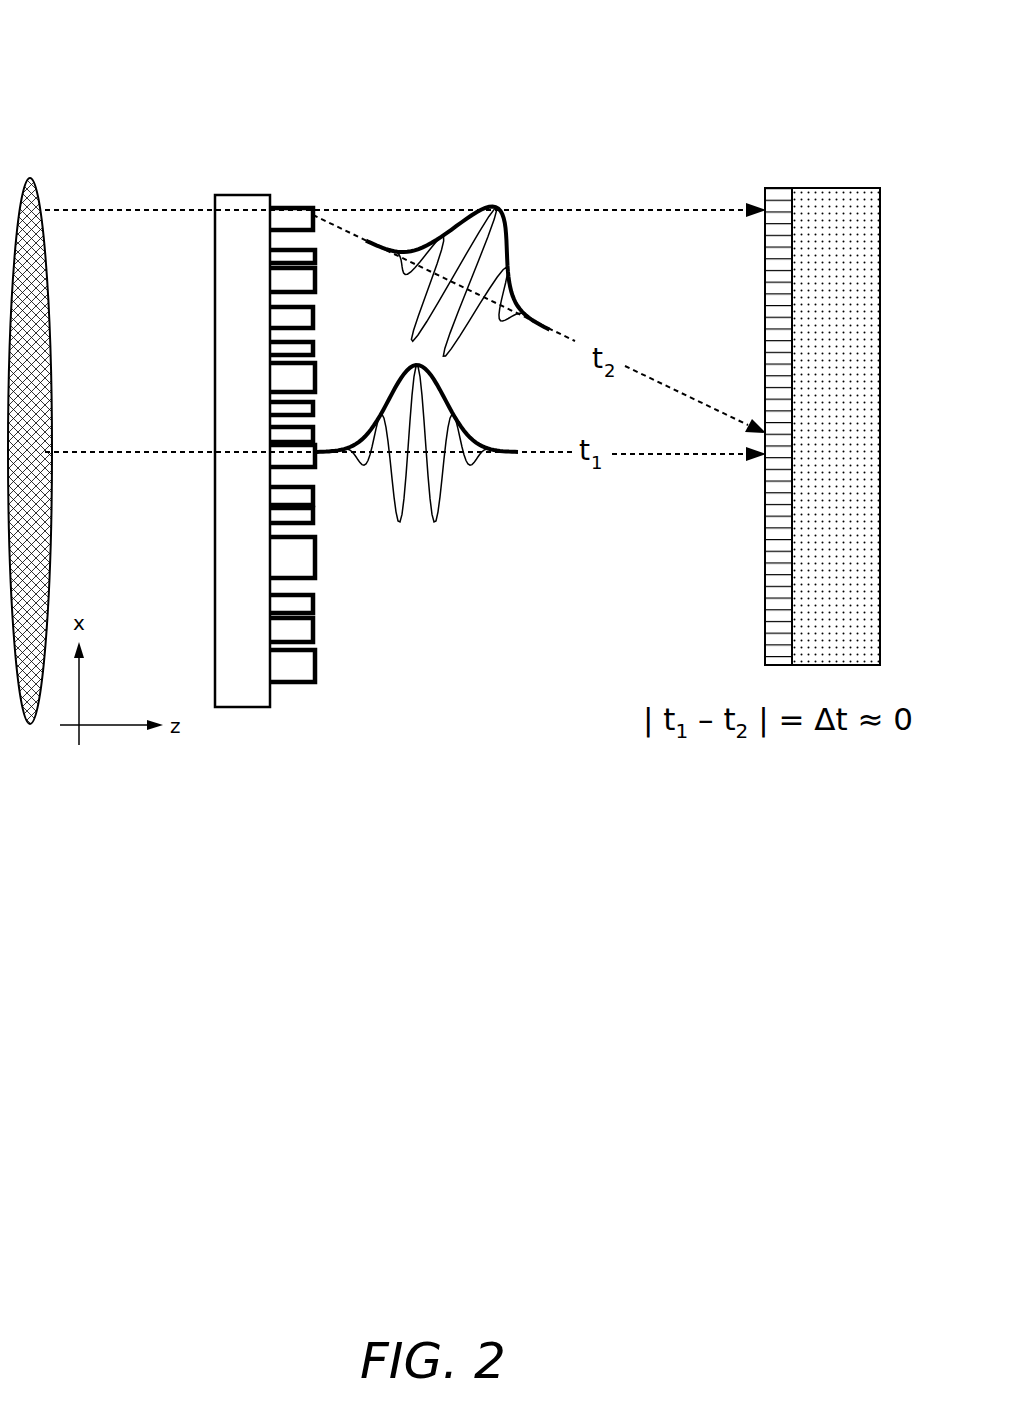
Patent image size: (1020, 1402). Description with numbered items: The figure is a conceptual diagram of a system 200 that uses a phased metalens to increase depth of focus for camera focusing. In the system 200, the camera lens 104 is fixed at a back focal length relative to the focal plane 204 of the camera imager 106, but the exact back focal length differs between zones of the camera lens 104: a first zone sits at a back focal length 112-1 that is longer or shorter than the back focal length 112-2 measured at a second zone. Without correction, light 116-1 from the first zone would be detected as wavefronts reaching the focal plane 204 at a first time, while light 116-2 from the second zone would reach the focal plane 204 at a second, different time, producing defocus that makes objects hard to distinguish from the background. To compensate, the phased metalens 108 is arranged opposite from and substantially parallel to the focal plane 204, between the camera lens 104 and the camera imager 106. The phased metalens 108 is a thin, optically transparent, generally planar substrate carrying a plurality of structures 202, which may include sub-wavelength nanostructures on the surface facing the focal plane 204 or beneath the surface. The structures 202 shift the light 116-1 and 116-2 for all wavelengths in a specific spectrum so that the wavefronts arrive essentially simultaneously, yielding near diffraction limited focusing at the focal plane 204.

The system 200 is at (86, 53).
The camera lens 104 is at (52, 318).
The phased metalens 108 is at (242, 195).
The structures 202 is at (308, 210).
The back focal length of first zone 112-1 is at (175, 450).
The back focal length of second zone 112-2 is at (185, 208).
The light from first zone 116-1 is at (470, 464).
The light from second zone 116-2 is at (525, 318).
The camera imager 106 is at (814, 188).
The focal plane 204 is at (764, 206).